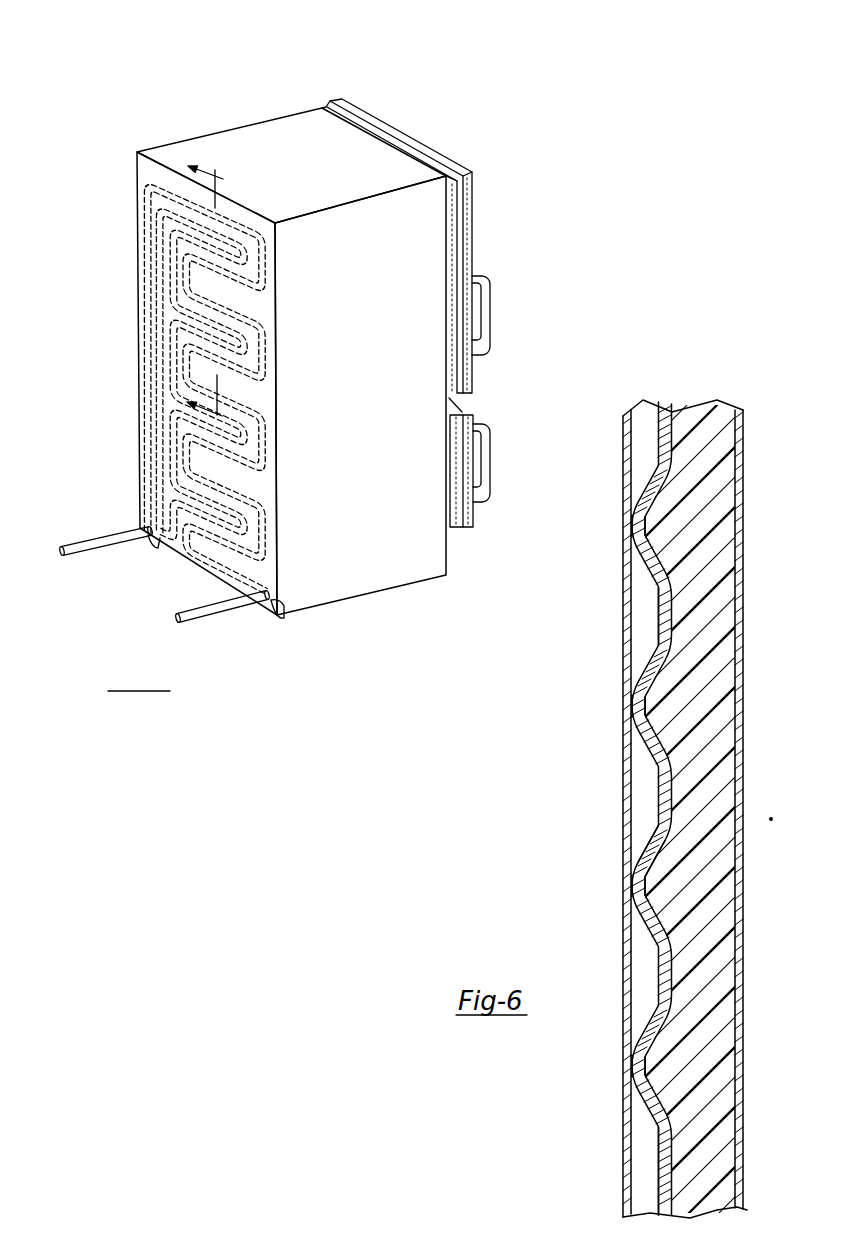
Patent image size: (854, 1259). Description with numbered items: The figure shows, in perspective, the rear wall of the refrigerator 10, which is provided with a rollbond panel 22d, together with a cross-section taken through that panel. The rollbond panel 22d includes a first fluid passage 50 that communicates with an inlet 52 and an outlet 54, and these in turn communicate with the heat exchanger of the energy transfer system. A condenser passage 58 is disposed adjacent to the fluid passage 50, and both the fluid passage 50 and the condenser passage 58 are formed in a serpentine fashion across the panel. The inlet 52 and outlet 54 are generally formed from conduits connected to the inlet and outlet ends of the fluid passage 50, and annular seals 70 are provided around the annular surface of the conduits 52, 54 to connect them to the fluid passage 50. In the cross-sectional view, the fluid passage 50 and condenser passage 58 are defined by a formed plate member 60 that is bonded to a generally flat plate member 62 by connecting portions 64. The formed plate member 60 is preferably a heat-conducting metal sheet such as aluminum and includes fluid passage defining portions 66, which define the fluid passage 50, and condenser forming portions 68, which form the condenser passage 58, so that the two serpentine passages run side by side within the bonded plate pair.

In FIG. 4, the refrigerator 10 is at (258, 94).
In FIG. 4, the rollbond panel 22d is at (260, 302).
In FIG. 4, the first fluid passage 50 is at (146, 300).
In FIG. 6, the first fluid passage 50 is at (638, 594).
In FIG. 4, the inlet 52 is at (97, 543).
In FIG. 4, the outlet 54 is at (203, 614).
In FIG. 4, the condenser passage 58 is at (160, 386).
In FIG. 6, the condenser passage 58 is at (640, 768).
In FIG. 4, the annular seals 70 is at (150, 553).
In FIG. 6, the formed plate member 60 is at (632, 888).
In FIG. 6, the flat plate member 62 is at (631, 866).
In FIG. 6, the connecting portions 64 is at (631, 520).
In FIG. 6, the fluid passage defining portions 66 is at (640, 613).
In FIG. 6, the condenser forming portions 68 is at (648, 800).